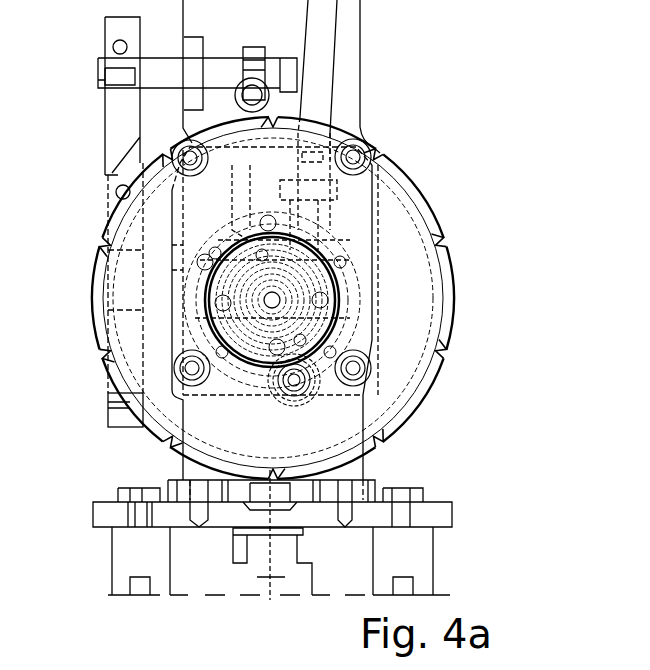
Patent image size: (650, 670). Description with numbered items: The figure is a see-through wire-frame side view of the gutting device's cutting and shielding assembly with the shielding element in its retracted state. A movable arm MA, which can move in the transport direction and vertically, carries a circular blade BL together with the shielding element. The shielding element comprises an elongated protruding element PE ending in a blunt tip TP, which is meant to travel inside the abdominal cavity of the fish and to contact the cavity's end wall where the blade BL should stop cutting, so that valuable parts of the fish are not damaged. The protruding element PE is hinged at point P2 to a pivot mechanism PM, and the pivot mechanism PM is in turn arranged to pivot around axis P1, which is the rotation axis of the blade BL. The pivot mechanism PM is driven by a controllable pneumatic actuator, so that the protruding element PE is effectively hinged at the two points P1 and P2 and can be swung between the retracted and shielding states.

The movable arm MA is at (254, 63).
The pivot mechanism PM is at (110, 175).
The hinge point P2 is at (116, 192).
The protruding element PE is at (110, 287).
The blunt tip TP is at (110, 420).
The blade BL is at (418, 280).
The rotation axis P1 is at (278, 304).